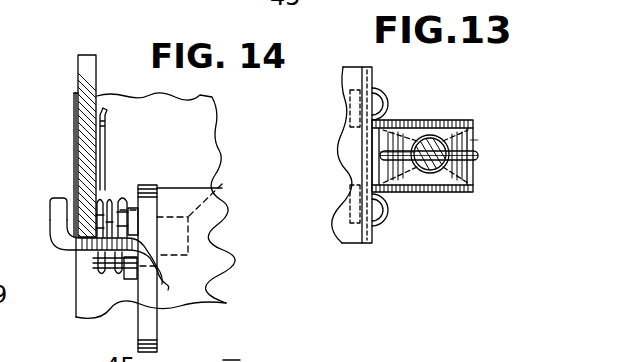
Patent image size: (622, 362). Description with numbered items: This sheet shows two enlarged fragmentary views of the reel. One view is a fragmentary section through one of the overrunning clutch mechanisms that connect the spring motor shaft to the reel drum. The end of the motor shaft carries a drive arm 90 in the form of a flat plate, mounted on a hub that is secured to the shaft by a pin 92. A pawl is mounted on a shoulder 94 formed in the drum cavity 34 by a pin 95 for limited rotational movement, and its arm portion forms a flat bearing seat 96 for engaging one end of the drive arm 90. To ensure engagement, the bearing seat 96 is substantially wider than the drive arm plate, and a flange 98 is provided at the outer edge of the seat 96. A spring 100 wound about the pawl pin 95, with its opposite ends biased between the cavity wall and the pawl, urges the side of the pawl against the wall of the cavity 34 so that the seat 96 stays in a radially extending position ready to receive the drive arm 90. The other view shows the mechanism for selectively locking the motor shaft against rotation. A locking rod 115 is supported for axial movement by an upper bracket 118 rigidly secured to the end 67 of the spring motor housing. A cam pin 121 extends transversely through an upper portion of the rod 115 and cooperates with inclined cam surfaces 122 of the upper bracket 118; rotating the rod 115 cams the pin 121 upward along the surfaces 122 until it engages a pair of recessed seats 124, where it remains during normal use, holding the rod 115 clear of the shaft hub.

In FIG. 14, the drum cavity 34 is at (90, 302).
In FIG. 14, the drive arm 90 is at (78, 72).
In FIG. 14, the pin 92 is at (143, 330).
In FIG. 14, the shoulder 94 is at (186, 186).
In FIG. 14, the pin 95 is at (222, 184).
In FIG. 14, the bearing seat 96 is at (72, 231).
In FIG. 14, the flange 98 is at (58, 198).
In FIG. 14, the spring 100 is at (115, 187).
In FIG. 13, the end of the spring motor housing 67 is at (373, 243).
In FIG. 13, the locking rod 115 is at (424, 140).
In FIG. 13, the upper bracket 118 is at (470, 137).
In FIG. 13, the cam pin 121 is at (410, 183).
In FIG. 13, the cam surfaces 122 is at (427, 128).
In FIG. 13, the recessed seats 124 is at (437, 128).